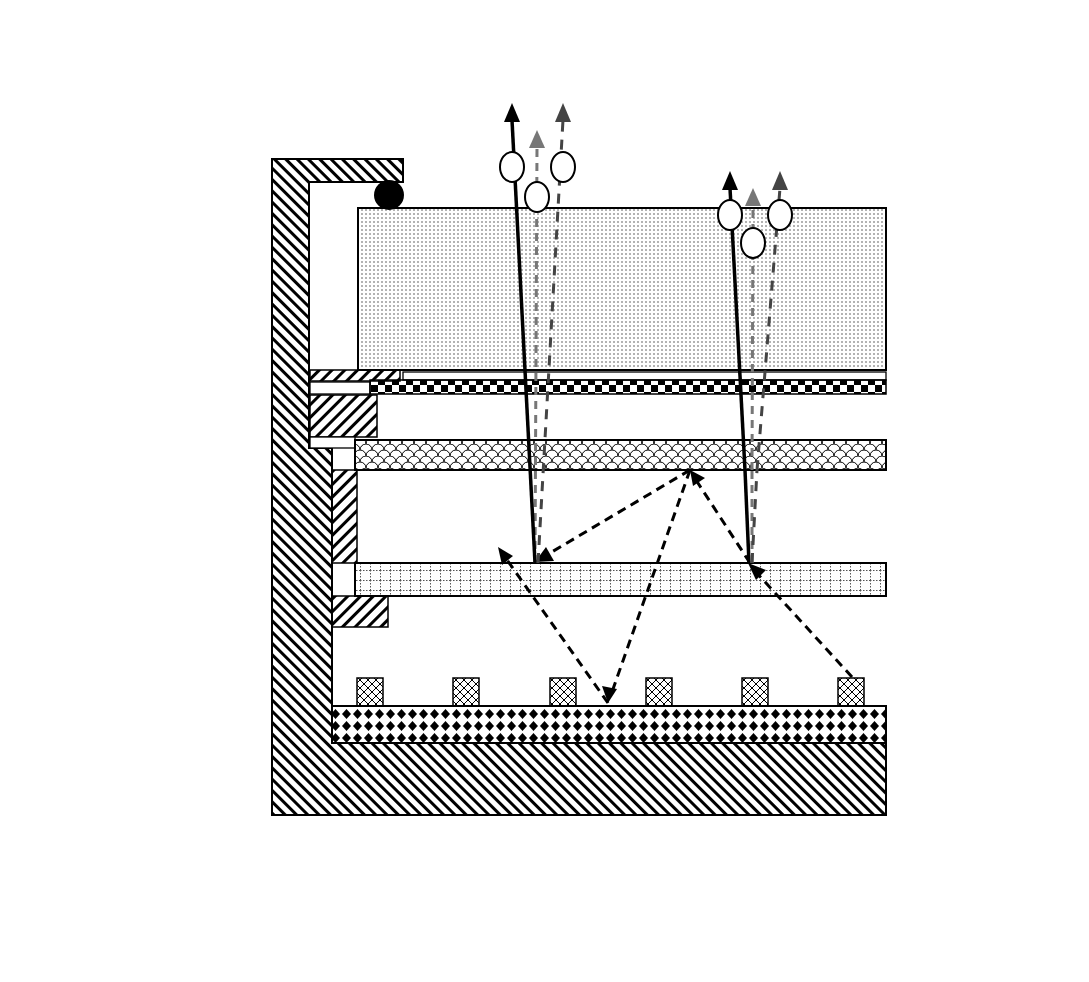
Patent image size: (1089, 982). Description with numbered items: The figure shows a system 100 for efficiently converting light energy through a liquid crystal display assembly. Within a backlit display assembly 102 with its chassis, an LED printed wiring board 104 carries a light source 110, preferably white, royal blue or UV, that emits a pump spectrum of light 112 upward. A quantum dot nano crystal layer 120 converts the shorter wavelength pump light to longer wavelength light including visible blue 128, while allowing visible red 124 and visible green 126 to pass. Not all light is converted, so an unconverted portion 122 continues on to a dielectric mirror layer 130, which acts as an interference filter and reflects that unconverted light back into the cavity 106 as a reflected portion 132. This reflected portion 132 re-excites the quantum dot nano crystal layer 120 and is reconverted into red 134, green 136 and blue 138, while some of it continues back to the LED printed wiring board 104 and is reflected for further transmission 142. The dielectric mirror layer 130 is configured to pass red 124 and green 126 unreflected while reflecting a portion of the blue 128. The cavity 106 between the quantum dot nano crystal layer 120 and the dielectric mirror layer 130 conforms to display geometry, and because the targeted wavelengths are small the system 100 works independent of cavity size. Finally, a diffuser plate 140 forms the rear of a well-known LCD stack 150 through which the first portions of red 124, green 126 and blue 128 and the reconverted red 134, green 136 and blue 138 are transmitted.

The system 100 is at (61, 134).
The display assembly 102 is at (270, 535).
The LED printed wiring board 104 is at (886, 725).
The cavity 106 is at (455, 472).
The light source 110 is at (472, 677).
The pump spectrum of light 112 is at (829, 634).
The quantum dot nano crystal layer 120 is at (886, 580).
The unconverted portion of light 122 is at (725, 510).
The visible red 124 is at (731, 155).
The visible green 126 is at (754, 161).
The visible blue 128 is at (781, 163).
The dielectric mirror layer 130 is at (886, 452).
The reflected portion 132 is at (663, 513).
The reconverted red 134 is at (495, 126).
The reconverted green 136 is at (533, 114).
The reconverted blue 138 is at (558, 95).
The diffuser plate 140 is at (886, 388).
The further transmission 142 is at (555, 656).
The LCD stack 150 is at (898, 205).